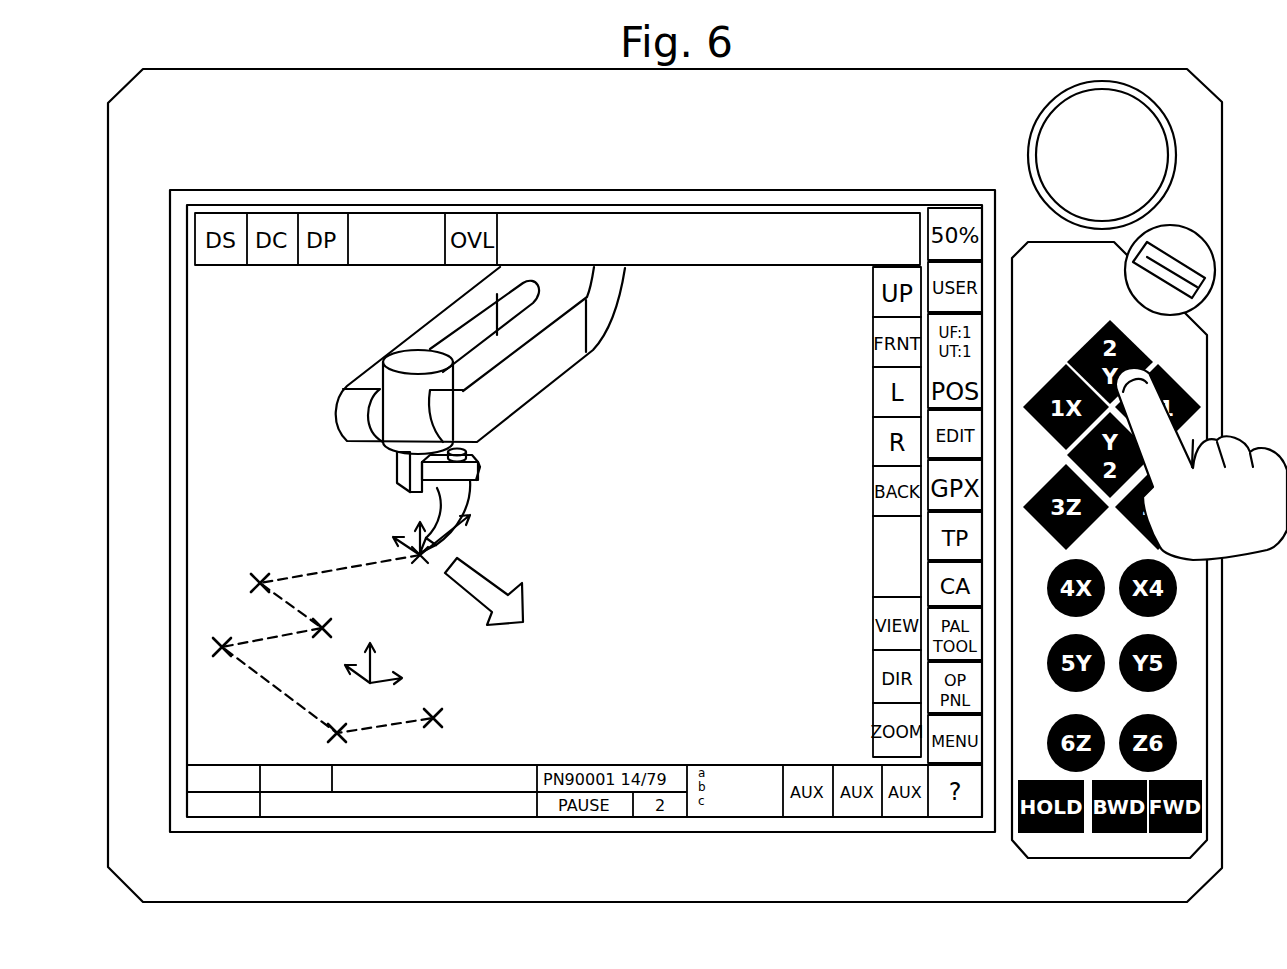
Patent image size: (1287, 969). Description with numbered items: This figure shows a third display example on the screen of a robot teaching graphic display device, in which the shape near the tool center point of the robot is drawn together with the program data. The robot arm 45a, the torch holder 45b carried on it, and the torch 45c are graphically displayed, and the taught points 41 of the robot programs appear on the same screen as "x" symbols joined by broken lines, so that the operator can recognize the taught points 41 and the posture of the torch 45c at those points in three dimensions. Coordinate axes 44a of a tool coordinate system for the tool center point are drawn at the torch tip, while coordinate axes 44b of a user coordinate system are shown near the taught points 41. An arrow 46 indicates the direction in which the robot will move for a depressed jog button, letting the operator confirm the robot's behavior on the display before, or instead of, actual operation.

The taught points 41 is at (259, 580).
The coordinate axes of a tool coordinate system 44a is at (440, 553).
The coordinate axes of a user coordinate system 44b is at (372, 685).
The robot arm 45a is at (596, 330).
The torch holder 45b is at (395, 473).
The torch 45c is at (472, 493).
The arrow 46 is at (527, 605).